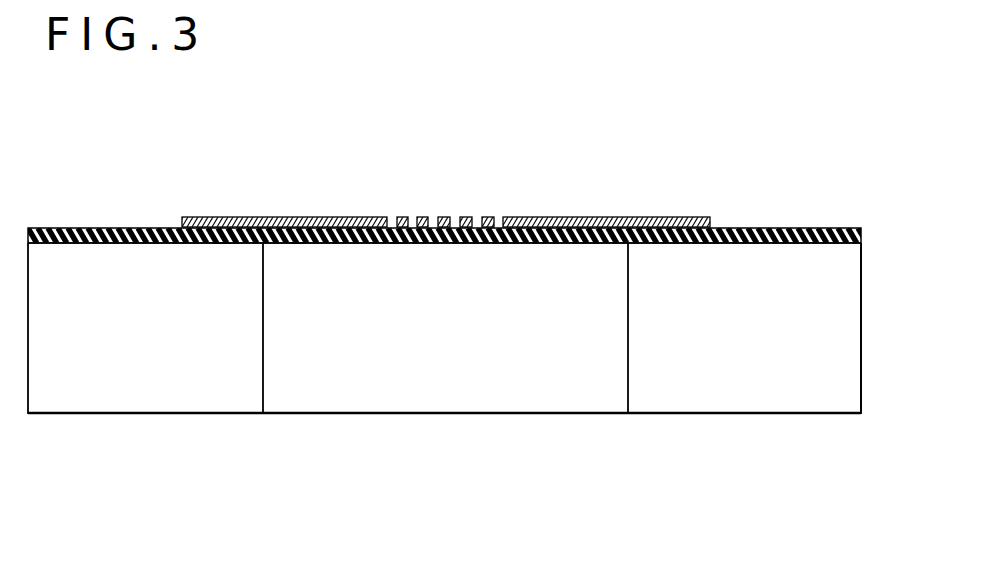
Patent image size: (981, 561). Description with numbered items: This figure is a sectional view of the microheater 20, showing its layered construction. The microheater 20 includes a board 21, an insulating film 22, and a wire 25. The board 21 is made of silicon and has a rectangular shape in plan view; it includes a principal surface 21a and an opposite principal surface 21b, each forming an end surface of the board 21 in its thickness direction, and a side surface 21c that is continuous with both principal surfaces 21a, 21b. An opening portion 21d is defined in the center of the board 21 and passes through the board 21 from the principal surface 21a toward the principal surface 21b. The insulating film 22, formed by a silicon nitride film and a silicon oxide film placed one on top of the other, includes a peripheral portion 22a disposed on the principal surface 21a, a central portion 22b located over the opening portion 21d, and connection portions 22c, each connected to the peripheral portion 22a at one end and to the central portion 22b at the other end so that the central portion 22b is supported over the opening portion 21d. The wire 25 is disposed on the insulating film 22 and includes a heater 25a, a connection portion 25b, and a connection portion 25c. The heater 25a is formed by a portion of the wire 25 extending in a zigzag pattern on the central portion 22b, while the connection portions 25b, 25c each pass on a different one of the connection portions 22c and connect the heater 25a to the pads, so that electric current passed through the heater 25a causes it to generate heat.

The microheater 20 is at (904, 136).
The board 21 is at (804, 400).
The principal surface 21a is at (148, 244).
The principal surface 21b is at (66, 413).
The side surface 21c is at (860, 318).
The opening portion 21d is at (635, 332).
The insulating film 22 is at (393, 462).
The peripheral portion 22a is at (222, 244).
The central portion 22b is at (398, 244).
The connection portions 22c is at (298, 244).
The wire 25 is at (567, 117).
The heater 25a is at (450, 216).
The connection portion 25b is at (332, 216).
The connection portion 25c is at (557, 216).